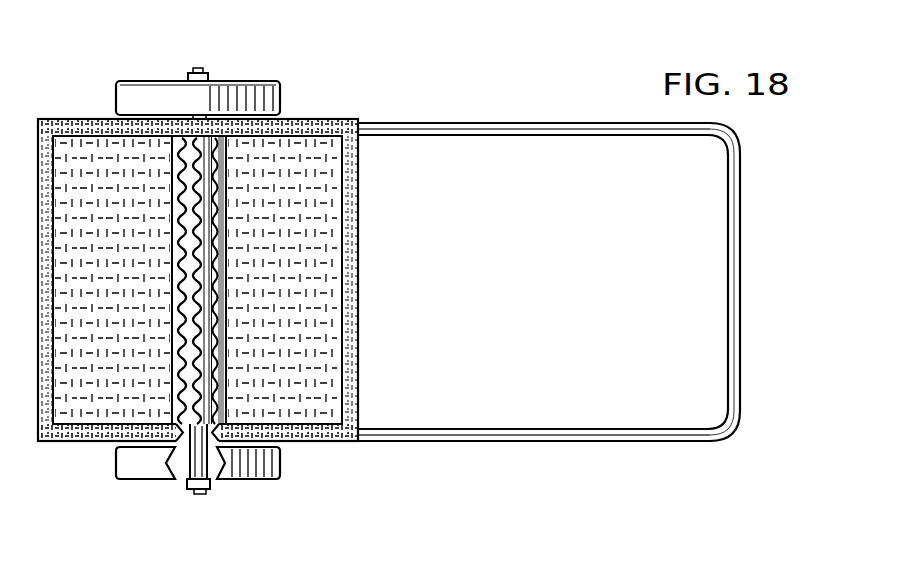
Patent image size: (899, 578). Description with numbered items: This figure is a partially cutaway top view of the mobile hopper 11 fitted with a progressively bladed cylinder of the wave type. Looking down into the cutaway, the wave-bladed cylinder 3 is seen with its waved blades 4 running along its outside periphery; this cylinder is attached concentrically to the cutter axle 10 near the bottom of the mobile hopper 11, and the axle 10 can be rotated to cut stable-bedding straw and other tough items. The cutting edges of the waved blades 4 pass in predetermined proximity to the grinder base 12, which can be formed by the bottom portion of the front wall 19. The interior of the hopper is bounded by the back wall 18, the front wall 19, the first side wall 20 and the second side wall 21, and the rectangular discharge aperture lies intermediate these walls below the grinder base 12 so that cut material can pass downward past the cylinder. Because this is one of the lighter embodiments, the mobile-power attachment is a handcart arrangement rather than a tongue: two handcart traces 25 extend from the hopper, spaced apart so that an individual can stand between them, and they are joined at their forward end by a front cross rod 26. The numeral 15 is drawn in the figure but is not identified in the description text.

The wave-bladed cylinder 3 is at (190, 253).
The waved blades 4 is at (192, 195).
The cutter axle 10 is at (197, 433).
The mobile hopper 11 is at (378, 90).
The grinder base 12 is at (230, 272).
The lower adjustment knob 15 is at (250, 465).
The back wall 18 is at (125, 363).
The front wall 19 is at (282, 312).
The first side wall 20 is at (282, 138).
The second side wall 21 is at (255, 424).
The handcart traces 25 is at (542, 130).
The front cross rod 26 is at (740, 283).